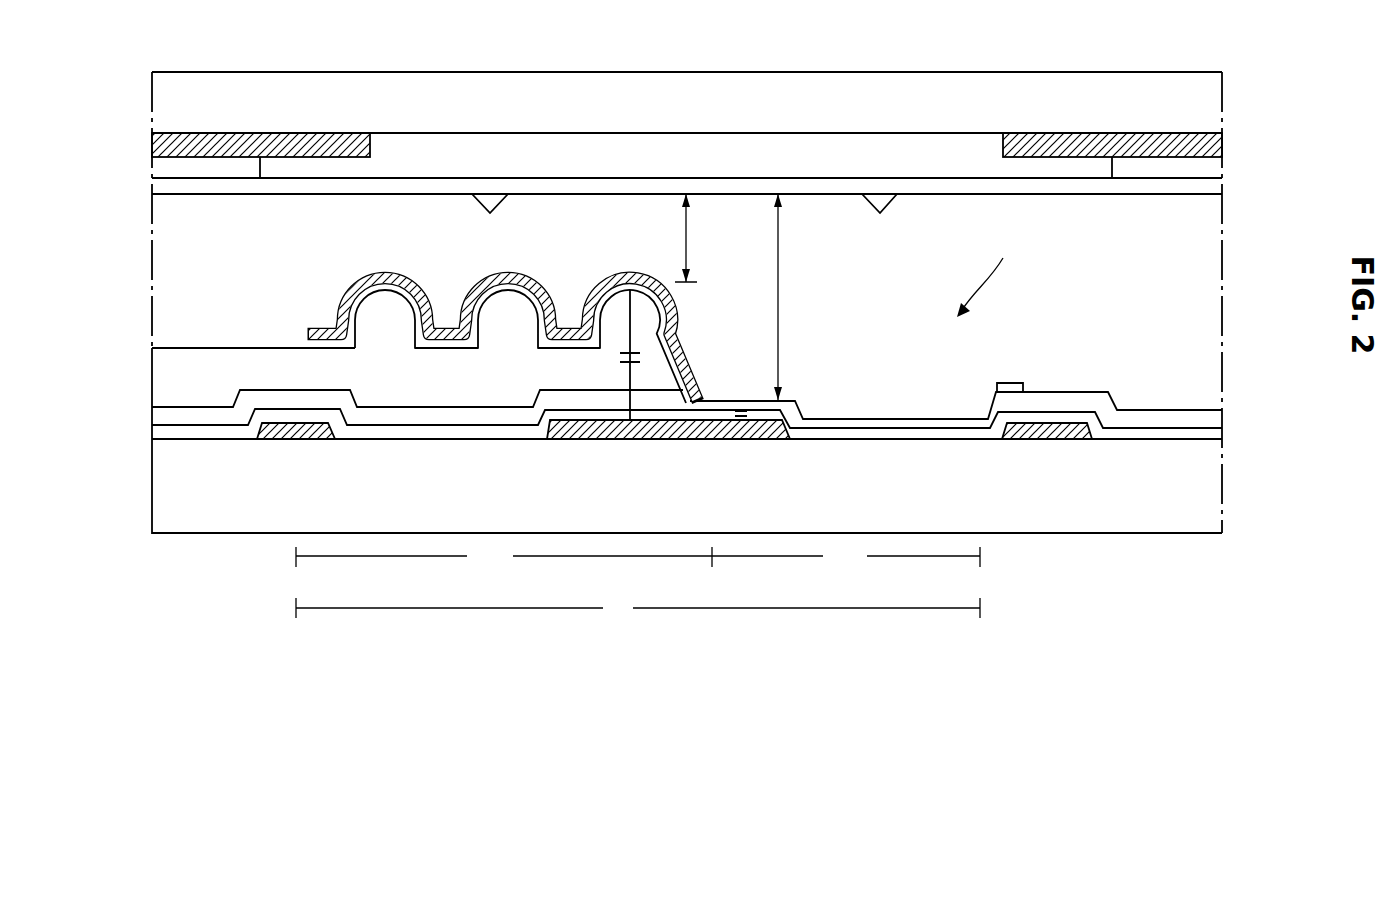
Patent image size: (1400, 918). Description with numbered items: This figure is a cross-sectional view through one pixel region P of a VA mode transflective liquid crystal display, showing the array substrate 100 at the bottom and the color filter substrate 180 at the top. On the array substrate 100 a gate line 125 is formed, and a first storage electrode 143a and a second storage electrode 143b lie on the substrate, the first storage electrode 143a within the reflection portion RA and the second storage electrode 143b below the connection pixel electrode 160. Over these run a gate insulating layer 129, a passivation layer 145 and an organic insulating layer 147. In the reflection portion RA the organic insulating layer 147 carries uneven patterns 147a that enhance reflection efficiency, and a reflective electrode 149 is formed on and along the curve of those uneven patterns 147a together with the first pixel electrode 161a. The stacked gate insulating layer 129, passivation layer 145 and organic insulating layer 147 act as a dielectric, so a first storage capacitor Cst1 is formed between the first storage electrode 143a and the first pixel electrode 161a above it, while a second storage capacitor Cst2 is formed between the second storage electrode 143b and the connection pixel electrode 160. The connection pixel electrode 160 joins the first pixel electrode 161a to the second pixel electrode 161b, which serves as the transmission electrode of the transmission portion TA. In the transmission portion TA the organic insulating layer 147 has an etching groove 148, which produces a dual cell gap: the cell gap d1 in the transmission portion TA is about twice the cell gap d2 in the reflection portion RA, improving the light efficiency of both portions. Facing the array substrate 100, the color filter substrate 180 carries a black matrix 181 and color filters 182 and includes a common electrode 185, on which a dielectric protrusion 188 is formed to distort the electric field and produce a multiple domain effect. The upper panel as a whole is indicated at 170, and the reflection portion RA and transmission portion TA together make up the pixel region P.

The array substrate 100 is at (496, 484).
The gate line 125 is at (287, 430).
The gate insulating layer 129 is at (153, 430).
The first storage electrode 143a is at (590, 430).
The second storage electrode 143b is at (740, 425).
The passivation layer 145 is at (157, 415).
The organic insulating layer 147 is at (213, 363).
The uneven patterns 147a is at (383, 307).
The reflective electrode 149 is at (513, 275).
The connection pixel electrode 160 is at (740, 398).
The first pixel electrode 161a is at (443, 345).
The second pixel electrode 161b is at (1012, 383).
The upper display panel 170 is at (1203, 300).
The color filter substrate 180 is at (653, 110).
The black matrix 181 is at (255, 132).
The color filters 182 is at (438, 140).
The common electrode 185 is at (750, 183).
The dielectric protrusion 188 is at (893, 208).
The etching groove 148 is at (1002, 277).
The first storage capacitor Cst1 is at (601, 355).
The second storage capacitor Cst2 is at (748, 415).
The cell gap in the transmission portion d1 is at (792, 297).
The cell gap in the reflection portion d2 is at (699, 238).
The reflection portion RA is at (504, 570).
The transmission portion TA is at (846, 570).
The pixel region P is at (638, 609).